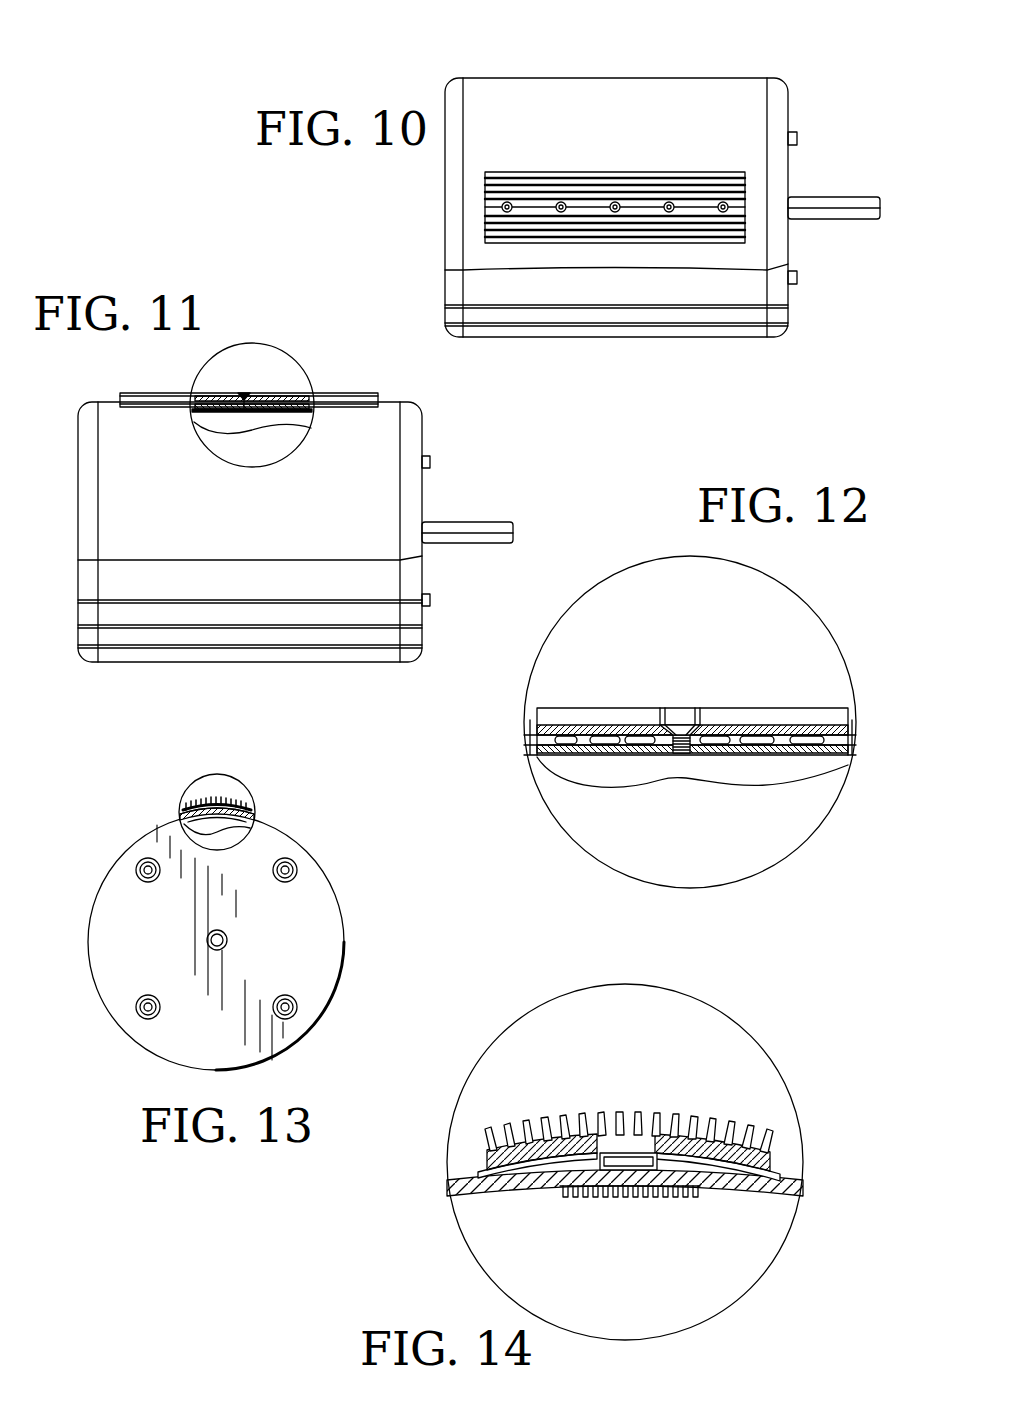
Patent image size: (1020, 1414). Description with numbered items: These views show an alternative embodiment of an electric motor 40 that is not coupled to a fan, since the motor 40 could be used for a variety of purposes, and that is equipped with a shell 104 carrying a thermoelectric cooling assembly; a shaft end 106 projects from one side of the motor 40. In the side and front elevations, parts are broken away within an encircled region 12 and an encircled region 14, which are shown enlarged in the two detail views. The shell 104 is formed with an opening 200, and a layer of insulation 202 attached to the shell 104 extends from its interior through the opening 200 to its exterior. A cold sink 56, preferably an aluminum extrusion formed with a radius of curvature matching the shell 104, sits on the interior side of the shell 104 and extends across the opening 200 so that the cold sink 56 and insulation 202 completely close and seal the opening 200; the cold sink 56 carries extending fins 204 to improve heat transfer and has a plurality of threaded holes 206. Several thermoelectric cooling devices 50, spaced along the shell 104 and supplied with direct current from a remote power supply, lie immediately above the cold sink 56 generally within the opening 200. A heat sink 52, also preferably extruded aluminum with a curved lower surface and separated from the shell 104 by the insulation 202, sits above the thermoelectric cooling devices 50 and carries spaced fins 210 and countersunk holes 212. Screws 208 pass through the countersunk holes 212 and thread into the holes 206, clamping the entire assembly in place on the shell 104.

In FIG. 10, the electric motor 40 is at (536, 78).
In FIG. 11, the electric motor 40 is at (77, 484).
In FIG. 13, the electric motor 40 is at (342, 880).
In FIG. 10, the shell 104 is at (658, 95).
In FIG. 11, the shell 104 is at (84, 540).
In FIG. 13, the shell 104 is at (300, 835).
In FIG. 14, the shell 104 is at (800, 1186).
In FIG. 10, the end cap / shaft end 106 is at (789, 110).
In FIG. 13, the end cap / shaft end 106 is at (338, 937).
In FIG. 10, the heat sink 52 is at (668, 180).
In FIG. 11, the heat sink 52 is at (366, 394).
In FIG. 12, the heat sink 52 is at (560, 708).
In FIG. 14, the heat sink 52 is at (510, 1132).
In FIG. 10, the screws 208 is at (509, 201).
In FIG. 12, the screws 208 is at (691, 725).
In FIG. 11, the encircled region 12 is at (296, 360).
In FIG. 13, the encircled region 14 is at (243, 782).
In FIG. 12, the spaced fins 210 is at (622, 718).
In FIG. 14, the spaced fins 210 is at (553, 1138).
In FIG. 12, the countersunk holes 212 is at (681, 725).
In FIG. 12, the thermoelectric cooling device 50 is at (630, 746).
In FIG. 14, the thermoelectric cooling device 50 is at (618, 1152).
In FIG. 12, the threaded holes 206 is at (690, 767).
In FIG. 12, the cold sink 56 is at (790, 748).
In FIG. 14, the cold sink 56 is at (648, 1200).
In FIG. 14, the opening 200 is at (658, 1162).
In FIG. 14, the insulation 202 is at (503, 1196).
In FIG. 14, the extending fins 204 is at (572, 1192).